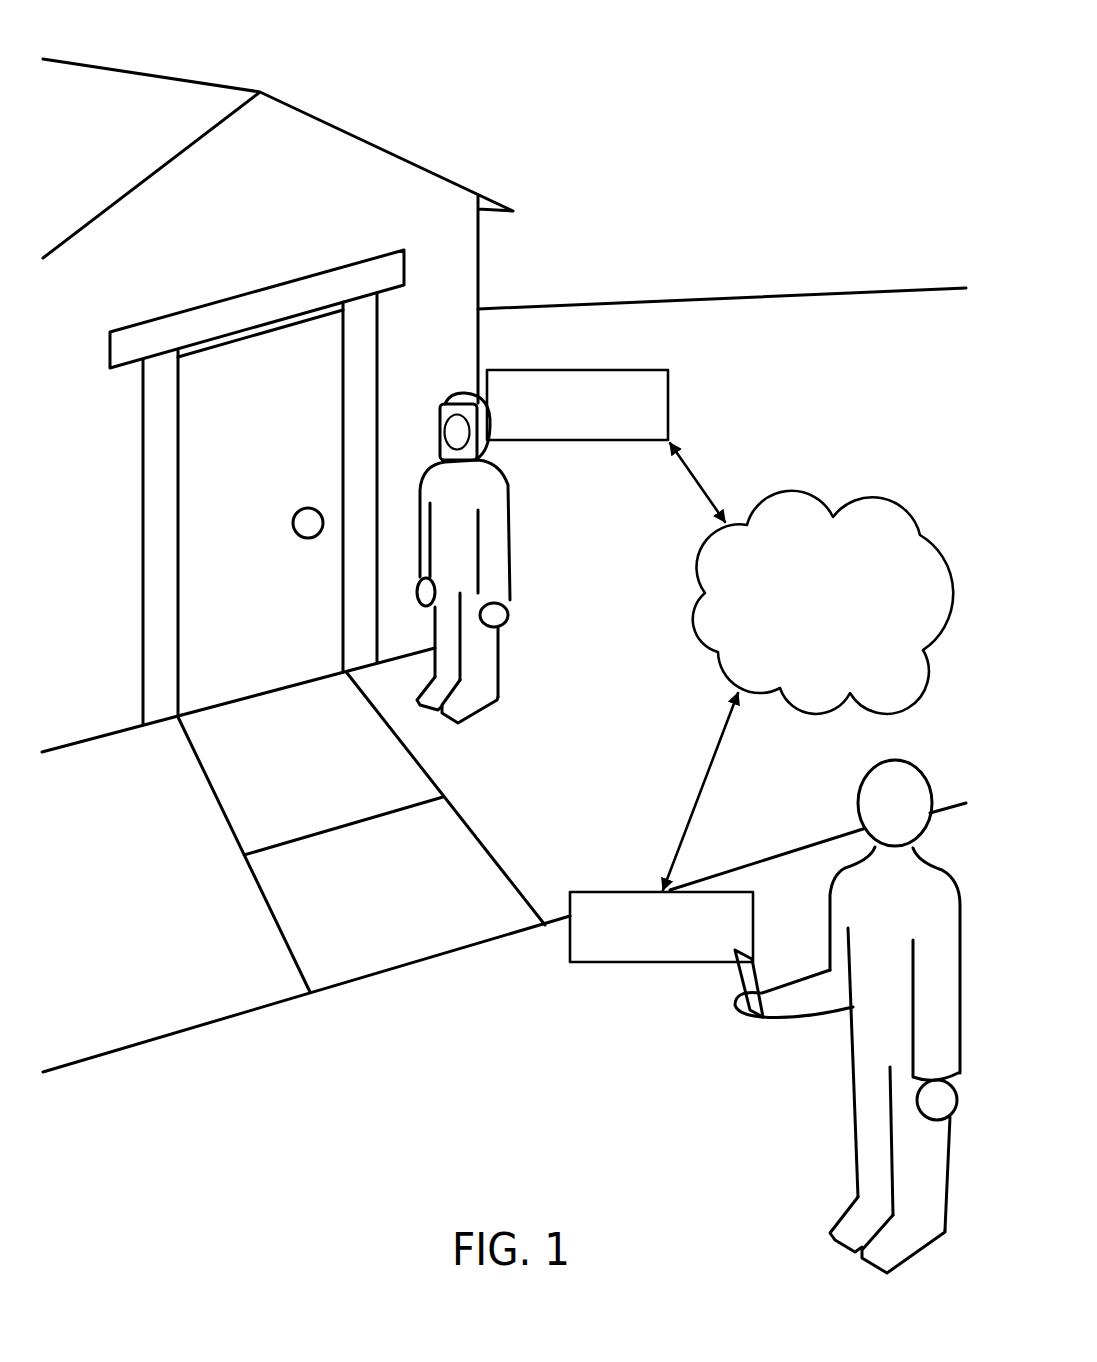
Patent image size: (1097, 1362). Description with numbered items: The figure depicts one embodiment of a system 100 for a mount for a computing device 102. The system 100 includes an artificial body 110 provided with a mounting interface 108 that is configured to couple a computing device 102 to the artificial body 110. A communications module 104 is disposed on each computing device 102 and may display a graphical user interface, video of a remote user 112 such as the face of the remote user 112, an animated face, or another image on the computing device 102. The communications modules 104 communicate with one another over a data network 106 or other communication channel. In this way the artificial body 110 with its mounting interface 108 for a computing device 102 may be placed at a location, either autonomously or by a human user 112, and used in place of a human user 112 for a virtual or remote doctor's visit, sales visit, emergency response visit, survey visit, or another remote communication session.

The system 100 is at (126, 57).
The computing device 102 is at (447, 404).
The communications module 104 is at (720, 951).
The data network 106 is at (804, 627).
The mounting interface 108 is at (440, 436).
The artificial body 110 is at (505, 507).
The human user 112 is at (862, 798).